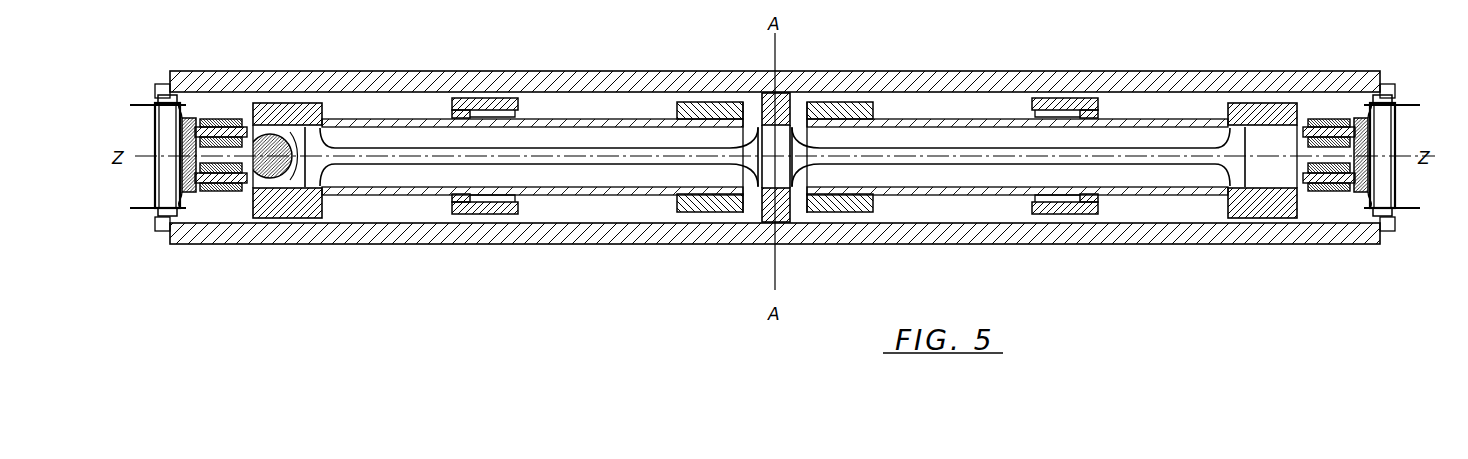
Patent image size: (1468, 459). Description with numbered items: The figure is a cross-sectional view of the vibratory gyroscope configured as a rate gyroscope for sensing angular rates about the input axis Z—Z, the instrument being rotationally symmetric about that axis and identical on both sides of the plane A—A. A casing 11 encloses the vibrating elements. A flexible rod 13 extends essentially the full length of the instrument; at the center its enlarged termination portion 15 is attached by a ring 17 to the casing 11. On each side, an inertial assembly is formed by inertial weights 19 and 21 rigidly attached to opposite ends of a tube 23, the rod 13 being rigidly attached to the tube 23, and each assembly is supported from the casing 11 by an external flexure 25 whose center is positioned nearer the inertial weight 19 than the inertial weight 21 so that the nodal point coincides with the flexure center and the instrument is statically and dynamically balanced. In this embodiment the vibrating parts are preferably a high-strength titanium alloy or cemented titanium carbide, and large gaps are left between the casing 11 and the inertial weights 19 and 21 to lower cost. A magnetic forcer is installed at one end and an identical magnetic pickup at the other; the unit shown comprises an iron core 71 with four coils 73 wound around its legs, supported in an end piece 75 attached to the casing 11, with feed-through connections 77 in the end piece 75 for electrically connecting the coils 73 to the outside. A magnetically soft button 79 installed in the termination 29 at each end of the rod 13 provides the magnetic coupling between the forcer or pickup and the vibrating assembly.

The casing 11 is at (412, 70).
The flexible rod 13 is at (592, 152).
The enlarged termination portion 15 is at (783, 173).
The ring 17 is at (795, 94).
The inertial weight 19 is at (307, 216).
The inertial weight 21 is at (712, 215).
The tube 23 is at (424, 196).
The external flexure 25 is at (508, 97).
The termination 29 is at (278, 188).
The iron core 71 is at (197, 122).
The coils 73 is at (230, 120).
The end piece 75 is at (156, 134).
The feed-through connections 77 is at (147, 214).
The magnetically soft button 79 is at (282, 146).